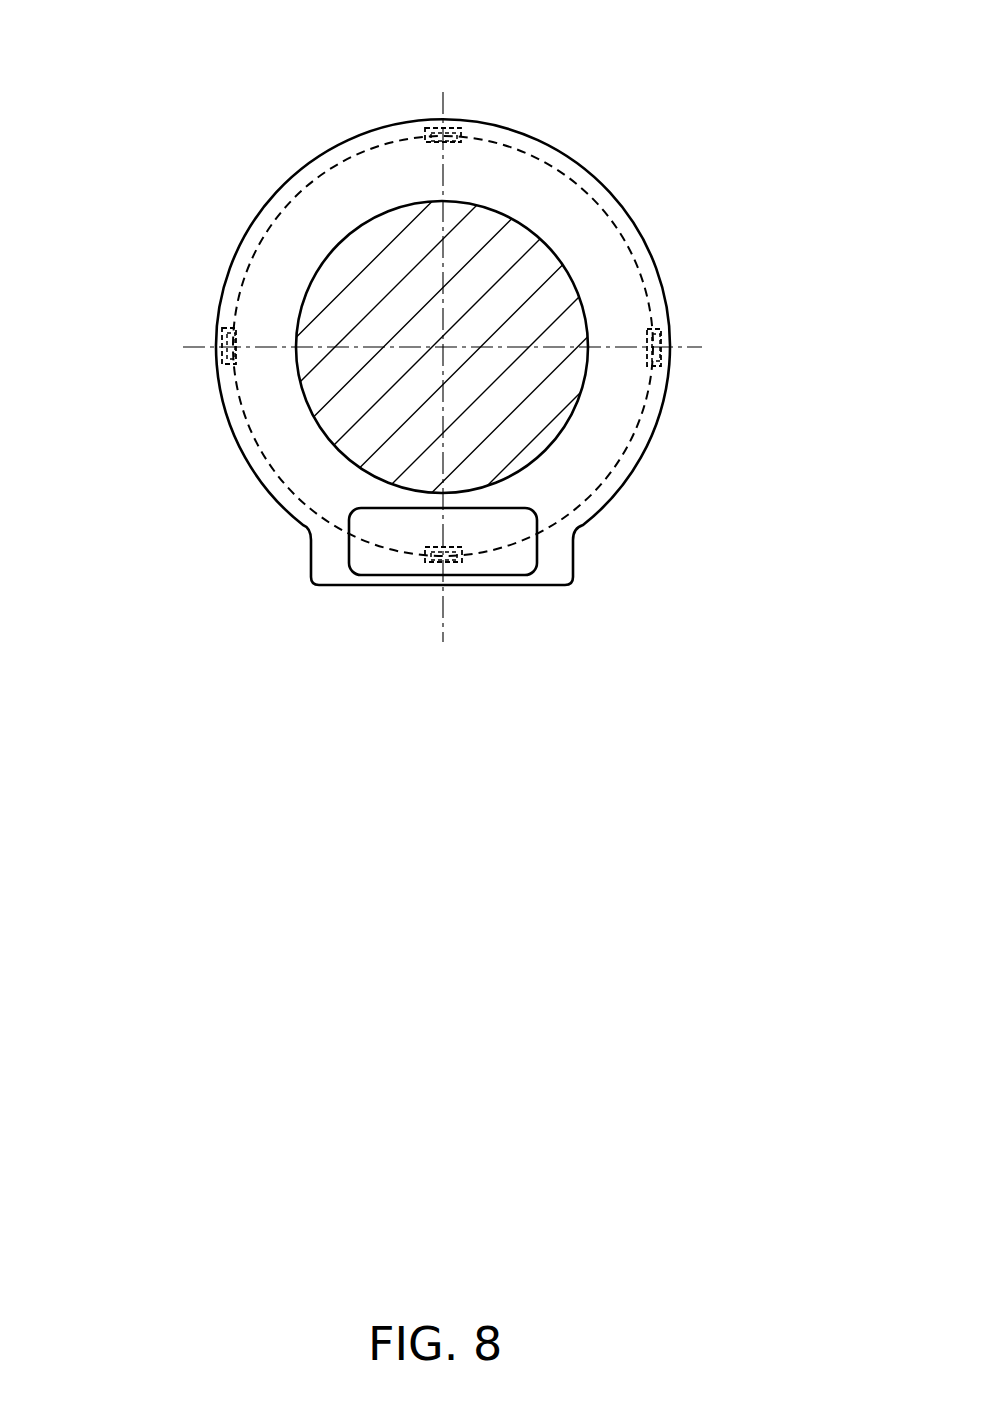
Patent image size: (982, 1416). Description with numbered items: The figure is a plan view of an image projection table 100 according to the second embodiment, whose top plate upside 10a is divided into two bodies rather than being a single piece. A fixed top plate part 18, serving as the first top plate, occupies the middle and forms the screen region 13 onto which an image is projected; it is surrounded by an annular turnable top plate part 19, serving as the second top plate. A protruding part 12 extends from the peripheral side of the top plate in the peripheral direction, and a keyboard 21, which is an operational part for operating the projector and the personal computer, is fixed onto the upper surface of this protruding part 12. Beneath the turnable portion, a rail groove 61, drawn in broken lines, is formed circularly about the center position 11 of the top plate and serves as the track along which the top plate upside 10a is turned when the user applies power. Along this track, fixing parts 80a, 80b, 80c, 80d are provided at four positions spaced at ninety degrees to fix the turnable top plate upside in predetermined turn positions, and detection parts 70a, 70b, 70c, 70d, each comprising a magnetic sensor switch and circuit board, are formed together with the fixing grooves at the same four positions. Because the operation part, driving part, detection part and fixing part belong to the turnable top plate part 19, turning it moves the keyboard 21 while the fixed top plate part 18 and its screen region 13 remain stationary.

The optical device 100 is at (440, 347).
The top plate upside 10a is at (474, 352).
The center position 11 is at (443, 343).
The protruding part 12 is at (558, 557).
The screen region 13 is at (537, 265).
The fixed top plate part 18 is at (457, 347).
The turnable top plate part 19 is at (580, 172).
The keyboard 21 is at (360, 564).
The rail groove 61 is at (643, 423).
The detection part 70a is at (452, 567).
The detection part 70b is at (668, 336).
The detection part 70c is at (452, 124).
The detection part 70d is at (211, 336).
The fixing part 80a is at (515, 617).
The fixing part 80b is at (733, 323).
The fixing part 80c is at (494, 101).
The fixing part 80d is at (148, 322).